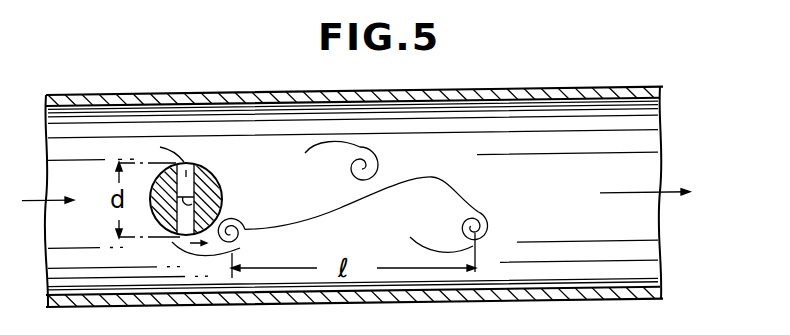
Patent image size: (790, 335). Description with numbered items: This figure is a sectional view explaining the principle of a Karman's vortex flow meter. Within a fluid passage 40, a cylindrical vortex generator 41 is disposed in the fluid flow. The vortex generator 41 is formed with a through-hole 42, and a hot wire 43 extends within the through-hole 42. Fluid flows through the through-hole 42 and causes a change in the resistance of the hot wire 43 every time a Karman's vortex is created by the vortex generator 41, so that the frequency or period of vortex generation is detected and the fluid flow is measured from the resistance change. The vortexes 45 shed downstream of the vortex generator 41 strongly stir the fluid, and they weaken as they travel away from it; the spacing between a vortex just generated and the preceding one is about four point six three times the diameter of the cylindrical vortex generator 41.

The fluid passage 40 is at (213, 93).
The cylindrical vortex generator 41 is at (213, 178).
The through-hole 42 is at (188, 163).
The hot wire 43 is at (195, 208).
The vortices 45 is at (378, 162).